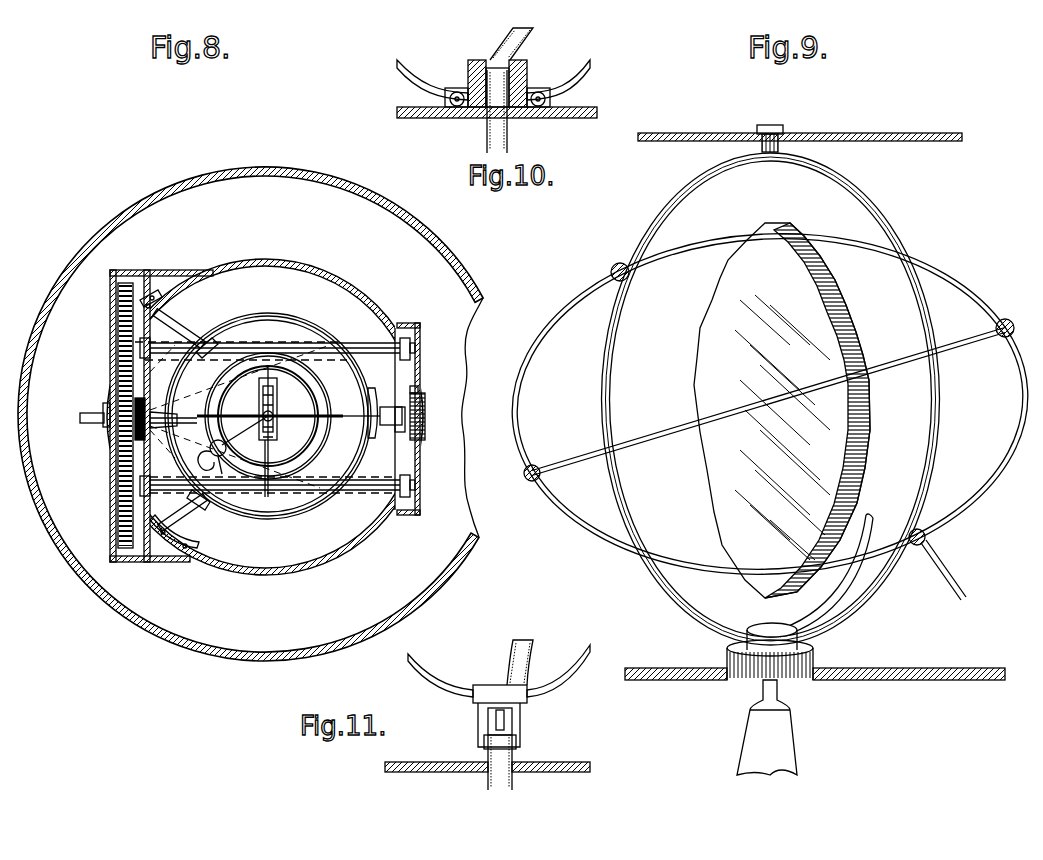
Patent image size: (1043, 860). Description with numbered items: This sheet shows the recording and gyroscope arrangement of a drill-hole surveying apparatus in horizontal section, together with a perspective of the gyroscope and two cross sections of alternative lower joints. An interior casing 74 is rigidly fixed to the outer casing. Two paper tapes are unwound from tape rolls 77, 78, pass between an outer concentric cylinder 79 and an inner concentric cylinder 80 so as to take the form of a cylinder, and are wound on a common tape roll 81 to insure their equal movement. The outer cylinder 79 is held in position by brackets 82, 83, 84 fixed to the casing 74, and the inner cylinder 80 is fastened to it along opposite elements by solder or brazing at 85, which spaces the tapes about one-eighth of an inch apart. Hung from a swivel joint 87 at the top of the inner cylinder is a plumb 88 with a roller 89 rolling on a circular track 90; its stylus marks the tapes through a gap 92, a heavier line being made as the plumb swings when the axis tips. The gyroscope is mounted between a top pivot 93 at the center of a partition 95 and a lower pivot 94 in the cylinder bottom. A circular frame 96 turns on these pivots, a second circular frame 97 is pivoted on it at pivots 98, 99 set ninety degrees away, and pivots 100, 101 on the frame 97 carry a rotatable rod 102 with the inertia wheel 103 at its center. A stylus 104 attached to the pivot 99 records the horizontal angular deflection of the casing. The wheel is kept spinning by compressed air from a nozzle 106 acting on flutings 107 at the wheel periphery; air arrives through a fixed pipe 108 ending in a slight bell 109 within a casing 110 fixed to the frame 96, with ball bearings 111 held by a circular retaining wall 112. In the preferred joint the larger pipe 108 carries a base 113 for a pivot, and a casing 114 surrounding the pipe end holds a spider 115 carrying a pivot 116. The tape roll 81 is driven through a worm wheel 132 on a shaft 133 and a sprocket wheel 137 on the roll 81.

In FIG. 8, the interior casing 74 is at (267, 576).
In FIG. 8, the tape roll 77 is at (353, 343).
In FIG. 8, the tape roll 78 is at (360, 490).
In FIG. 8, the outer concentric cylinder 79 is at (262, 318).
In FIG. 8, the inner concentric cylinder 80 is at (258, 320).
In FIG. 8, the common tape roll 81 is at (398, 432).
In FIG. 8, the bracket 82 is at (190, 524).
In FIG. 8, the bracket 83 is at (182, 310).
In FIG. 8, the bracket 84 is at (376, 388).
In FIG. 8, the solder or brazing joint 85 is at (366, 414).
In FIG. 8, the swivel joint 87 is at (258, 410).
In FIG. 8, the plumb 88 is at (221, 470).
In FIG. 8, the roller 89 is at (210, 448).
In FIG. 8, the circular track 90 is at (220, 390).
In FIG. 8, the gap 92 is at (284, 406).
In FIG. 9, the top pivot 93 is at (782, 145).
In FIG. 9, the lower pivot 94 is at (814, 660).
In FIG. 9, the partition 95 is at (862, 133).
In FIG. 9, the circular frame 96 is at (880, 215).
In FIG. 10, the circular frame 96 is at (588, 62).
In FIG. 11, the circular frame 96 is at (590, 648).
In FIG. 9, the circular frame 97 is at (958, 292).
In FIG. 9, the pivot 98 is at (611, 268).
In FIG. 9, the pivot 99 is at (926, 538).
In FIG. 9, the pivot 100 is at (524, 474).
In FIG. 9, the pivot 101 is at (1007, 320).
In FIG. 8, the rotatable rod 102 is at (288, 420).
In FIG. 9, the rotatable rod 102 is at (640, 435).
In FIG. 9, the inertia wheel 103 is at (716, 303).
In FIG. 8, the stylus 104 is at (268, 492).
In FIG. 9, the stylus 104 is at (962, 599).
In FIG. 9, the nozzle 106 is at (838, 582).
In FIG. 10, the nozzle 106 is at (530, 34).
In FIG. 11, the nozzle 106 is at (520, 650).
In FIG. 9, the flutings 107 is at (862, 335).
In FIG. 9, the fixed pipe 108 is at (796, 752).
In FIG. 10, the fixed pipe 108 is at (508, 140).
In FIG. 11, the fixed pipe 108 is at (513, 781).
In FIG. 10, the bell 109 is at (520, 76).
In FIG. 10, the casing 110 is at (473, 60).
In FIG. 10, the ball bearings 111 is at (449, 99).
In FIG. 10, the circular retaining wall 112 is at (548, 99).
In FIG. 11, the base 113 is at (490, 740).
In FIG. 11, the casing 114 is at (478, 684).
In FIG. 11, the spider 115 is at (520, 707).
In FIG. 11, the pivot 116 is at (512, 727).
In FIG. 8, the worm wheel 132 is at (120, 466).
In FIG. 8, the shaft 133 is at (132, 430).
In FIG. 8, the sprocket wheel 137 is at (128, 448).